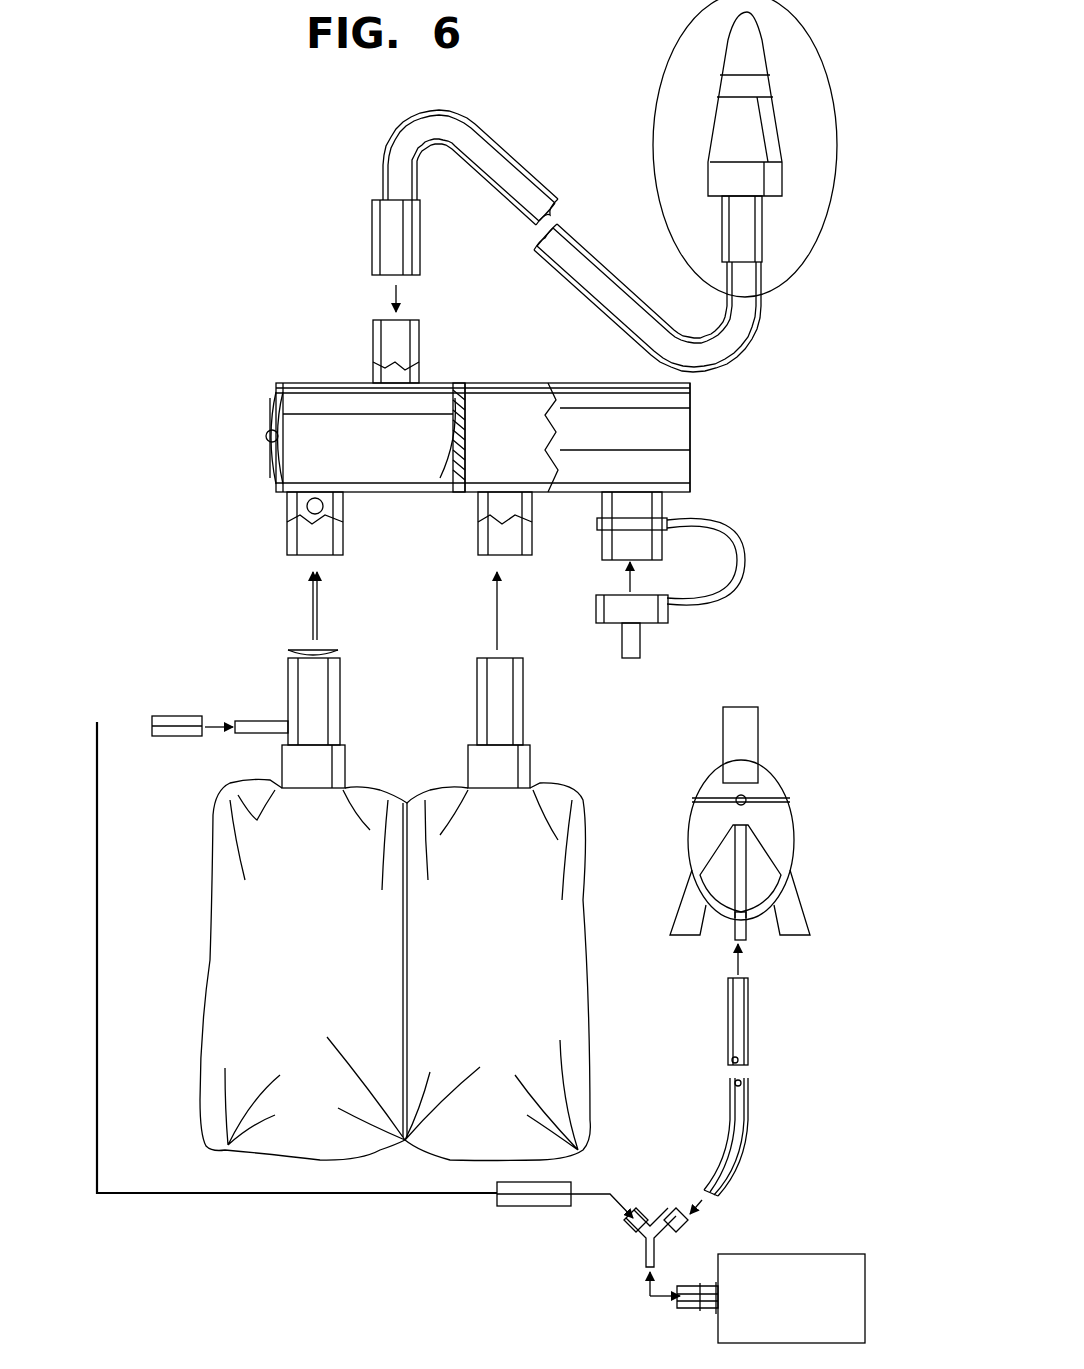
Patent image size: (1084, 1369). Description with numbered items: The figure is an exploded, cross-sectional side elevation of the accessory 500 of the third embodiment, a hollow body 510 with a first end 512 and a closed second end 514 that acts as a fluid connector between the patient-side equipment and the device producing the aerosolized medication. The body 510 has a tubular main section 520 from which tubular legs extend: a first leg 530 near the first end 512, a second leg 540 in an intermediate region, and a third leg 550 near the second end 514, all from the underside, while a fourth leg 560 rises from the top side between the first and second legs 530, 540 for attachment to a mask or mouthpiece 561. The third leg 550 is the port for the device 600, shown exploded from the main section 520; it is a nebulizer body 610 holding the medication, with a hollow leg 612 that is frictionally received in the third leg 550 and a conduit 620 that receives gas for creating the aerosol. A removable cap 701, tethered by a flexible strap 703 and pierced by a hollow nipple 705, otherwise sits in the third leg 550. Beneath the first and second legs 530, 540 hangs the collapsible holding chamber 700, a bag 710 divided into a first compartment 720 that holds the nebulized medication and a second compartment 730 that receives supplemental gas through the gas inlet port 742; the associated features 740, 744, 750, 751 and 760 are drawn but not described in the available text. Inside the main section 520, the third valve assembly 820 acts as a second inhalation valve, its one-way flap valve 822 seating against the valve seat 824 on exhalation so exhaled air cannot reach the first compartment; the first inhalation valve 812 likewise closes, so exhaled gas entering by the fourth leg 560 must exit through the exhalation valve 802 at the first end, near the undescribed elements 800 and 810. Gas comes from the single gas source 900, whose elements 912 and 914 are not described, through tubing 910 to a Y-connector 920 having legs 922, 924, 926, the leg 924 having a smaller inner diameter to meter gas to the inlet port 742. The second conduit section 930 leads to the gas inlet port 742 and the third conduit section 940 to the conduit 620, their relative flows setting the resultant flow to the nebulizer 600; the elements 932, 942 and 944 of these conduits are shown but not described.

The accessory 500 is at (712, 412).
The body 510 is at (335, 383).
The first end 512 is at (280, 383).
The second end 514 is at (690, 455).
The main section 520 is at (440, 383).
The first leg 530 is at (345, 544).
The second leg 540 is at (535, 552).
The third leg 550 is at (670, 500).
The fourth leg 560 is at (420, 335).
The mask or mouthpiece 561 is at (672, 65).
The nebulizer 600 is at (790, 778).
The nebulizer body 610 is at (780, 852).
The leg 612 is at (765, 730).
The conduit 620 is at (728, 940).
The holding chamber 700 is at (210, 905).
The removable cap 701 is at (670, 620).
The flexible strap 703 is at (745, 562).
The nipple 705 is at (645, 648).
The bag 710 is at (265, 1003).
The first compartment 720 is at (315, 980).
The second compartment 730 is at (499, 980).
The first neck 740 is at (340, 706).
The gas inlet port 742 is at (262, 722).
The gas inlet arrow 744 is at (225, 724).
The second neck 750 is at (522, 715).
The check valve 751 is at (305, 510).
The divider 760 is at (412, 1045).
The end cap 800 is at (265, 418).
The exhalation valve 802 is at (270, 458).
The closure cap 810 is at (330, 650).
The first inhalation valve 812 is at (298, 645).
The third valve assembly 820 is at (445, 418).
The valve element 822 is at (442, 468).
The valve seat 824 is at (475, 448).
The gas source 900 is at (822, 1258).
The tubing 910 is at (698, 1312).
The gas source outlet 912 is at (710, 1275).
The gas flow arrow 914 is at (642, 1280).
The Y-connector 920 is at (632, 1234).
The leg 922 is at (642, 1262).
The leg 924 is at (640, 1212).
The leg 926 is at (688, 1228).
The second conduit section 930 is at (180, 720).
The gas line end 932 is at (590, 1185).
The third conduit section 940 is at (750, 1040).
The gas tube lower end 942 is at (690, 1165).
The gas tube upper end 944 is at (760, 975).